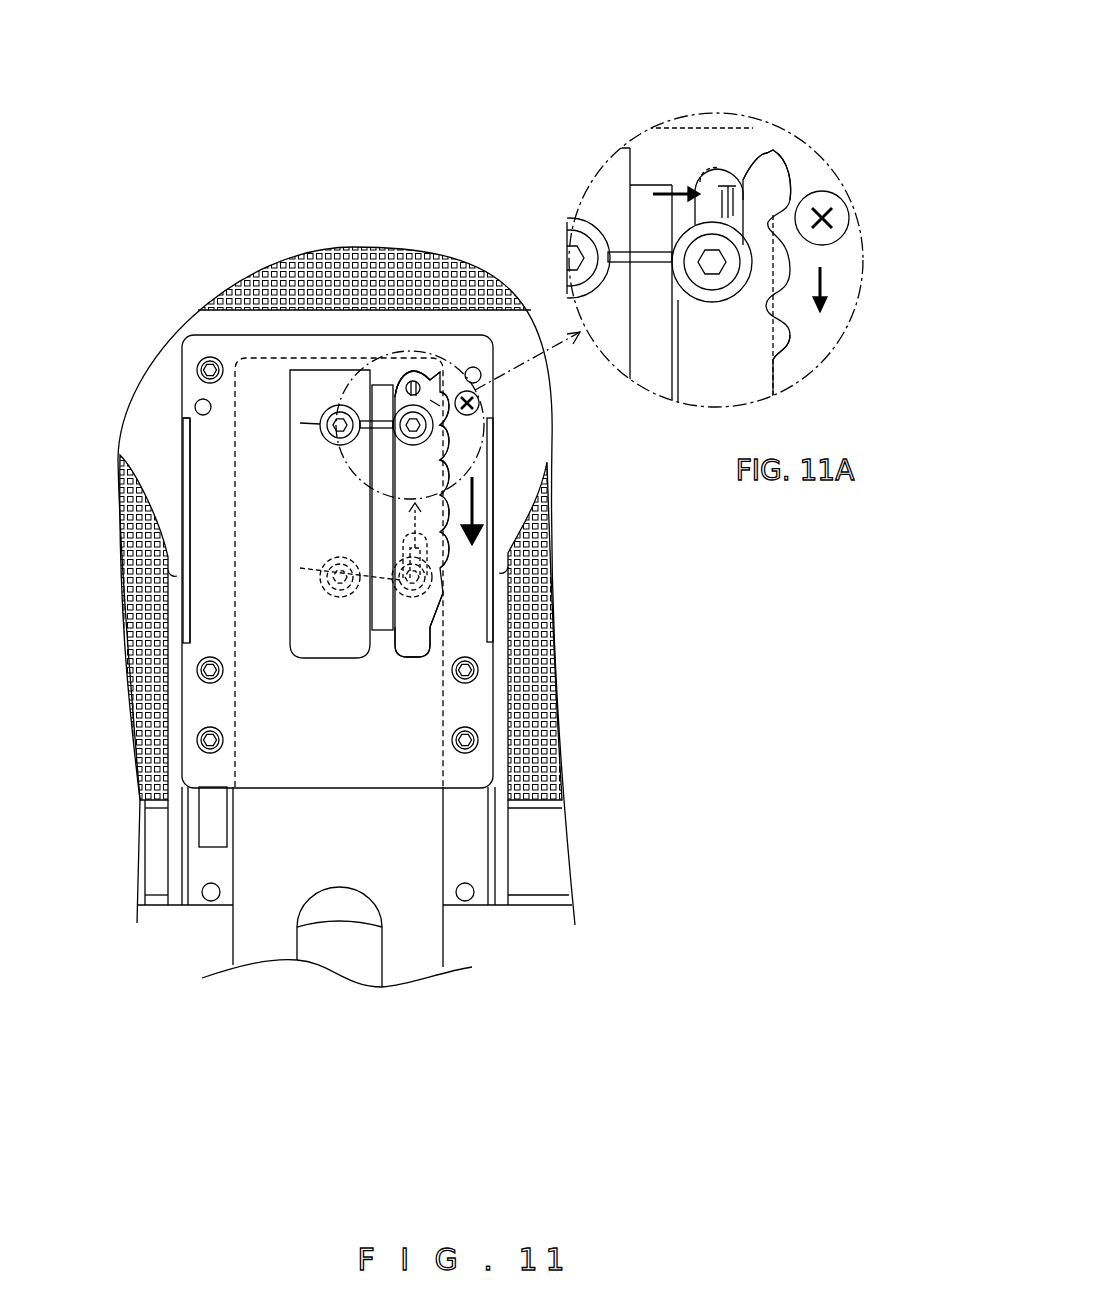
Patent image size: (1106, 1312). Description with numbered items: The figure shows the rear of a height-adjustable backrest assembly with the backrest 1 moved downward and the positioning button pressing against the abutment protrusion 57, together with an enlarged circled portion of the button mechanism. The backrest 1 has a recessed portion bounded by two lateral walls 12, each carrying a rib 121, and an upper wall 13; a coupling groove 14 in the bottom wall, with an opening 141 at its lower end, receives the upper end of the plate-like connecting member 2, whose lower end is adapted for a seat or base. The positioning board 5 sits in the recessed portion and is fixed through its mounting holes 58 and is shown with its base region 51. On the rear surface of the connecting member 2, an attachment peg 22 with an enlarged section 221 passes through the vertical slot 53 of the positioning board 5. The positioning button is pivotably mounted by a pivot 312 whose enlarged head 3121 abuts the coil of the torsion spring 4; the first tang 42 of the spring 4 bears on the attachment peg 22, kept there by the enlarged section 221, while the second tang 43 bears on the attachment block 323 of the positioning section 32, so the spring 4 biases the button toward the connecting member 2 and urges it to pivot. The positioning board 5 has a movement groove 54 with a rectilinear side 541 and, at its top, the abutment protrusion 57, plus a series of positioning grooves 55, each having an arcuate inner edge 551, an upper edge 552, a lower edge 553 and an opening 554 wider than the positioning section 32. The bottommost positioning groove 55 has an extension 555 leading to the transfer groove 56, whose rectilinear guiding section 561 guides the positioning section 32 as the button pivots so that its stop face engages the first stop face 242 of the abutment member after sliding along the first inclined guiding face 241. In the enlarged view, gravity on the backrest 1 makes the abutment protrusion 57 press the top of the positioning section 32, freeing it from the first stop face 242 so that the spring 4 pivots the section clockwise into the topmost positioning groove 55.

In FIG. 11, the backrest 1 is at (157, 420).
In FIG. 11, the lateral wall 12 is at (182, 455).
In FIG. 11, the rib 121 is at (185, 490).
In FIG. 11, the upper wall 13 is at (262, 337).
In FIG. 11, the coupling groove 14 is at (260, 618).
In FIG. 11, the opening 141 is at (288, 897).
In FIG. 11, the connecting member 2 is at (288, 826).
In FIG. 11, the attachment peg 22 is at (332, 406).
In FIG. 11A, the attachment peg 22 is at (568, 258).
In FIG. 11A, the enlarged section 221 is at (592, 287).
In FIG. 11A, the first inclined guiding face 241 is at (712, 157).
In FIG. 11A, the first stop face 242 is at (700, 182).
In FIG. 11, the pivot 312 is at (413, 425).
In FIG. 11A, the pivot 312 is at (712, 265).
In FIG. 11A, the enlarged head 3121 is at (697, 293).
In FIG. 11, the positioning section 32 is at (425, 385).
In FIG. 11A, the positioning section 32 is at (700, 173).
In FIG. 11, the attachment block 323 is at (437, 405).
In FIG. 11A, the attachment block 323 is at (730, 190).
In FIG. 11, the spring 4 is at (415, 377).
In FIG. 11, the first tang 42 is at (383, 386).
In FIG. 11A, the first tang 42 is at (645, 262).
In FIG. 11, the second tang 43 is at (424, 388).
In FIG. 11A, the second tang 43 is at (722, 215).
In FIG. 11, the positioning board 5 is at (207, 440).
In FIG. 11, the base 51 is at (185, 423).
In FIG. 11, the slot 53 is at (300, 392).
In FIG. 11, the movement groove 54 is at (417, 478).
In FIG. 11, the rectilinear side 541 is at (428, 564).
In FIG. 11, the positioning groove 55 is at (452, 467).
In FIG. 11A, the positioning groove 55 is at (770, 163).
In FIG. 11A, the inner edge 551 is at (778, 172).
In FIG. 11A, the upper edge 552 is at (772, 155).
In FIG. 11, the lower edge 553 is at (467, 403).
In FIG. 11A, the lower edge 553 is at (773, 212).
In FIG. 11, the opening 554 is at (446, 543).
In FIG. 11A, the opening 554 is at (777, 340).
In FIG. 11, the extension 555 is at (440, 613).
In FIG. 11, the transfer groove 56 is at (412, 646).
In FIG. 11, the rectilinear guiding section 561 is at (431, 628).
In FIG. 11, the abutment protrusion 57 is at (421, 379).
In FIG. 11A, the abutment protrusion 57 is at (702, 177).
In FIG. 11, the mounting hole 58 is at (198, 403).